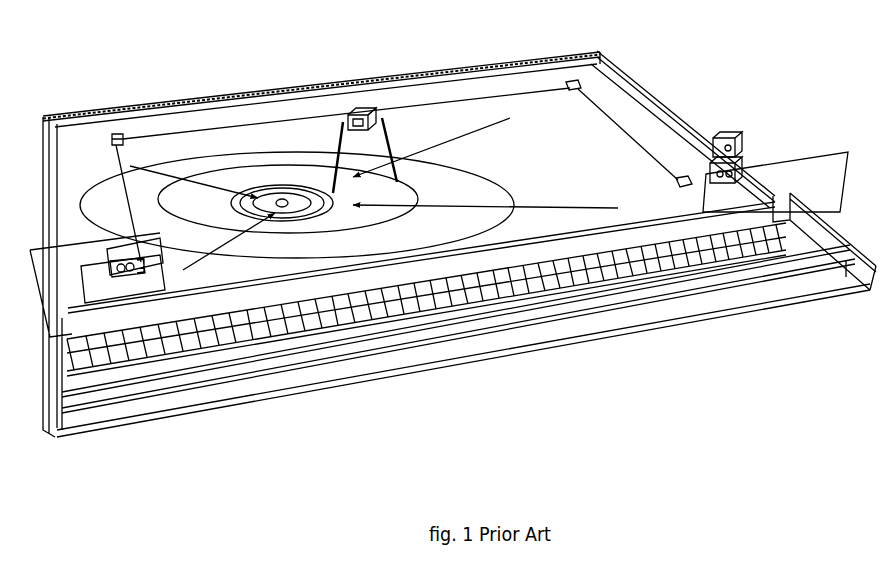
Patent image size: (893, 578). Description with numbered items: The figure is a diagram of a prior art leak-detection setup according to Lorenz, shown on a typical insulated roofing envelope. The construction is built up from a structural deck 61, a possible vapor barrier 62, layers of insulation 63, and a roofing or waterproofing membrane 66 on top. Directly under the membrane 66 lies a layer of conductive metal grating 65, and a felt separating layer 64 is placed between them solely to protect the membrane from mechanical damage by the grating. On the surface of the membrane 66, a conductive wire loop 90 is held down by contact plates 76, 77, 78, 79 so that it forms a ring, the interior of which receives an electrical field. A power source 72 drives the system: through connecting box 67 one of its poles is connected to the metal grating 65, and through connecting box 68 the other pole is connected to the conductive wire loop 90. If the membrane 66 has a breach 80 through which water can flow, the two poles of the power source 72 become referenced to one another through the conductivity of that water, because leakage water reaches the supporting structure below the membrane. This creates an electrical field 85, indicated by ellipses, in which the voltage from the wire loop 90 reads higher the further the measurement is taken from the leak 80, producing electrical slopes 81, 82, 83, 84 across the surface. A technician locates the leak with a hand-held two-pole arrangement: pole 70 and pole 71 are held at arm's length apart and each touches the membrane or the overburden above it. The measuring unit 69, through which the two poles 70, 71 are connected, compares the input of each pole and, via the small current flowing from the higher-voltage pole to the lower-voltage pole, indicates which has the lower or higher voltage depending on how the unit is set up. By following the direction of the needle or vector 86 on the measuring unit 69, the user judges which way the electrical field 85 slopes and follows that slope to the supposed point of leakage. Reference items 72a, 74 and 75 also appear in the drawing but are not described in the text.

The structural deck 61 is at (530, 348).
The vapor barrier 62 is at (103, 400).
The layers of insulation 63 is at (183, 373).
The felt separating layer 64 is at (215, 306).
The conductive metal grating 65 is at (314, 328).
The roofing or waterproofing membrane 66 is at (311, 239).
The connecting box 67 is at (737, 167).
The connecting box 68 is at (118, 246).
The measuring unit 69 is at (359, 102).
The pole 70 is at (390, 136).
The pole 71 is at (337, 145).
The power source 72 is at (723, 131).
The lower sensor block 72a is at (737, 145).
The rail end cap 74 is at (815, 257).
The mounting frame 75 is at (68, 330).
The contact plate 76 is at (143, 261).
The contact plate 77 is at (119, 132).
The contact plate 78 is at (597, 55).
The contact plate 79 is at (675, 182).
The breach 80 is at (281, 199).
The electrical slope 81 is at (485, 197).
The electrical slope 82 is at (431, 147).
The electrical slope 83 is at (194, 178).
The electrical slope 84 is at (229, 241).
The electrical field 85 is at (464, 169).
The needle or vector 86 is at (359, 118).
The conductive wire loop 90 is at (622, 125).